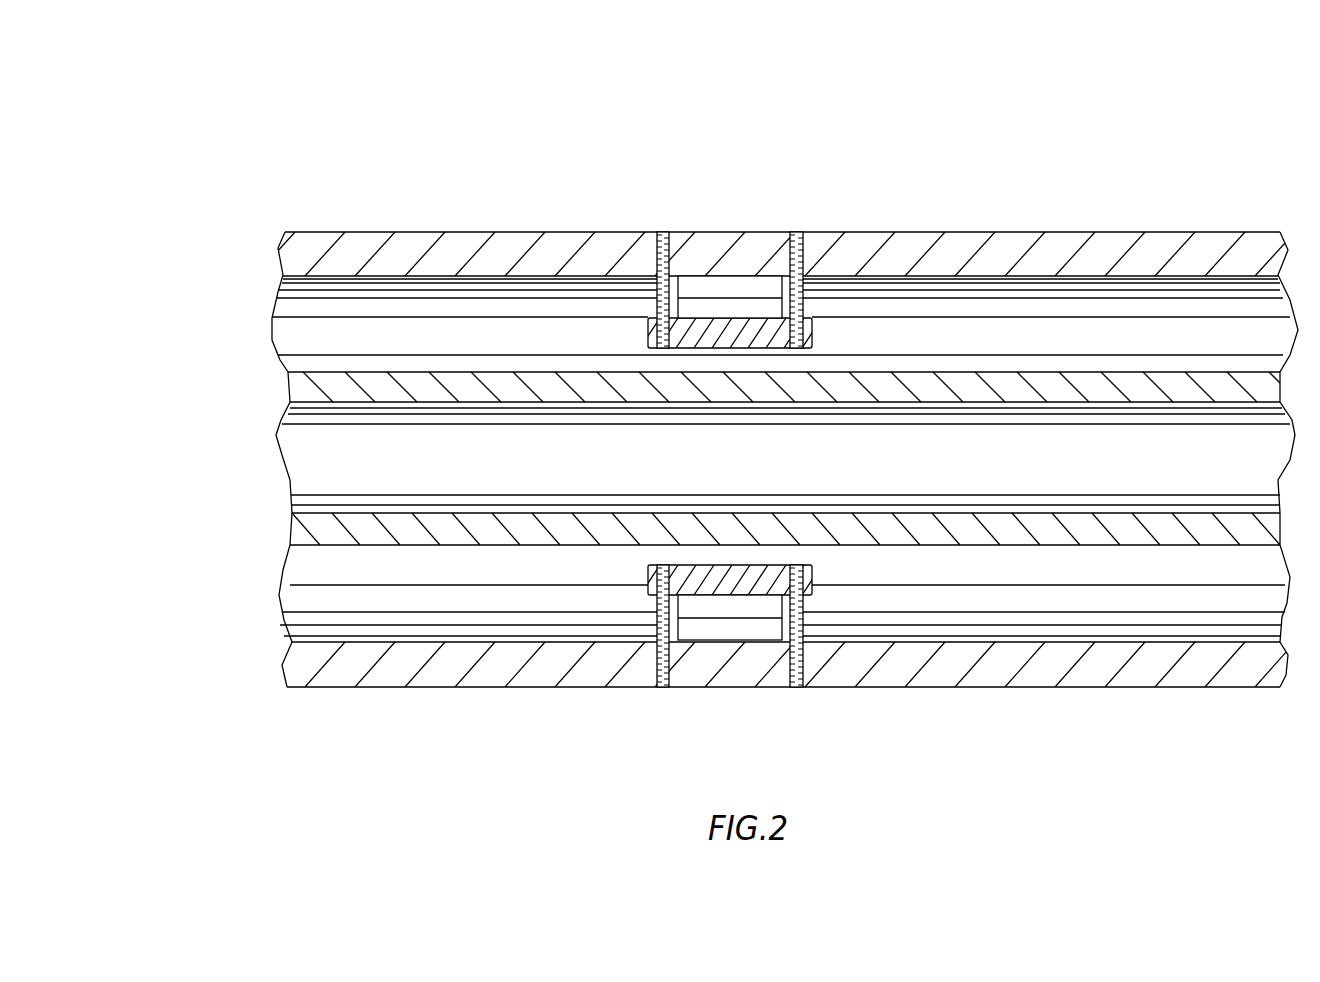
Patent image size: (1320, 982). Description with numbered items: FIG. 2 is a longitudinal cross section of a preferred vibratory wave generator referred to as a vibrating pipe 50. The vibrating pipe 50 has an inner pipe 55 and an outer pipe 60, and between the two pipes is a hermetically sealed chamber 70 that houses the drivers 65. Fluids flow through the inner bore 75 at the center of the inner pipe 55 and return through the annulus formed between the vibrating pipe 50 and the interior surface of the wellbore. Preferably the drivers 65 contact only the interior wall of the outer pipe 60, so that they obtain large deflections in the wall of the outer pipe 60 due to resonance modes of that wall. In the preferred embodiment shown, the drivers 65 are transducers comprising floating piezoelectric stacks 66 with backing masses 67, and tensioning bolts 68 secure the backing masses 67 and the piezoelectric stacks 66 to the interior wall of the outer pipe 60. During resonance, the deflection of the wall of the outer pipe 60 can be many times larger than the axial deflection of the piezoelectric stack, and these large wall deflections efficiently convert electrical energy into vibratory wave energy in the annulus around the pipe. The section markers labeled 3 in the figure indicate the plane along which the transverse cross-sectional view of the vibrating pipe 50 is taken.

The vibrating pipe 50 is at (1202, 127).
The hermetically sealed chamber 70 is at (391, 310).
The inner bore 75 is at (313, 452).
The inner pipe 55 is at (333, 547).
The outer pipe 60 is at (1236, 687).
The drivers 65 is at (718, 424).
The floating piezoelectric stacks 66 is at (702, 287).
The backing masses 67 is at (812, 333).
The tensioning bolts 68 is at (806, 306).
The section line 3- 3 is at (1110, 212).